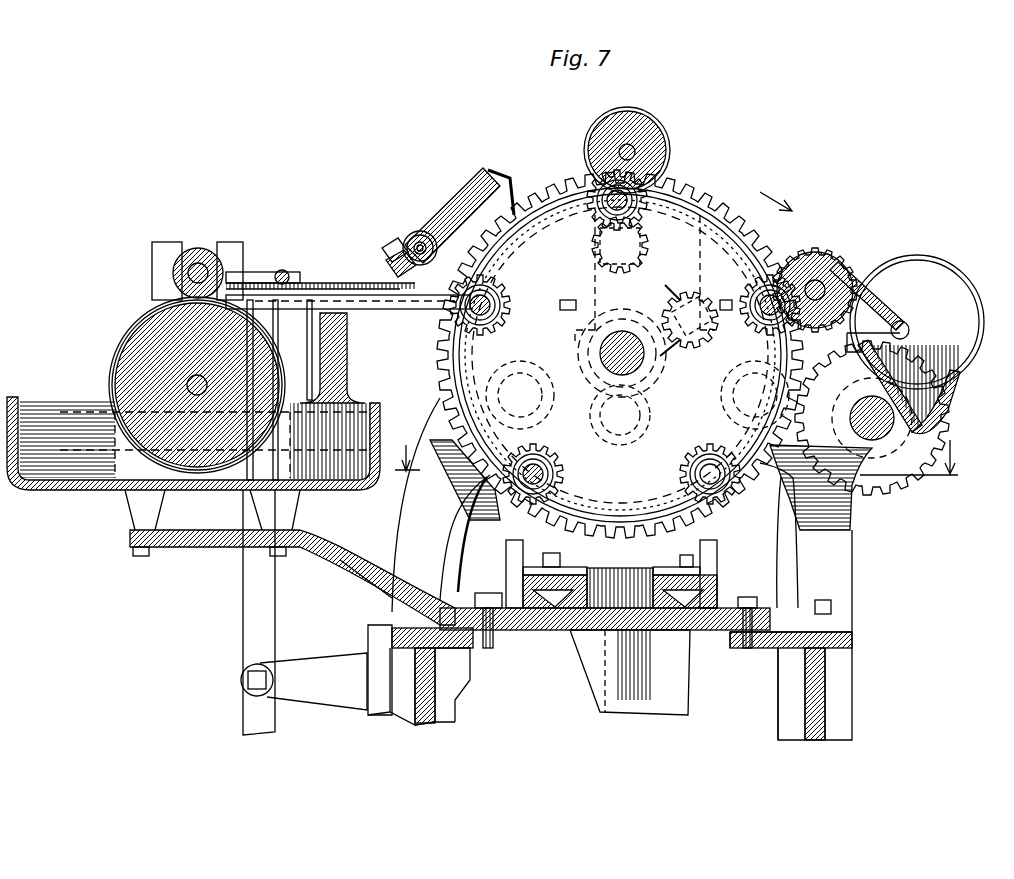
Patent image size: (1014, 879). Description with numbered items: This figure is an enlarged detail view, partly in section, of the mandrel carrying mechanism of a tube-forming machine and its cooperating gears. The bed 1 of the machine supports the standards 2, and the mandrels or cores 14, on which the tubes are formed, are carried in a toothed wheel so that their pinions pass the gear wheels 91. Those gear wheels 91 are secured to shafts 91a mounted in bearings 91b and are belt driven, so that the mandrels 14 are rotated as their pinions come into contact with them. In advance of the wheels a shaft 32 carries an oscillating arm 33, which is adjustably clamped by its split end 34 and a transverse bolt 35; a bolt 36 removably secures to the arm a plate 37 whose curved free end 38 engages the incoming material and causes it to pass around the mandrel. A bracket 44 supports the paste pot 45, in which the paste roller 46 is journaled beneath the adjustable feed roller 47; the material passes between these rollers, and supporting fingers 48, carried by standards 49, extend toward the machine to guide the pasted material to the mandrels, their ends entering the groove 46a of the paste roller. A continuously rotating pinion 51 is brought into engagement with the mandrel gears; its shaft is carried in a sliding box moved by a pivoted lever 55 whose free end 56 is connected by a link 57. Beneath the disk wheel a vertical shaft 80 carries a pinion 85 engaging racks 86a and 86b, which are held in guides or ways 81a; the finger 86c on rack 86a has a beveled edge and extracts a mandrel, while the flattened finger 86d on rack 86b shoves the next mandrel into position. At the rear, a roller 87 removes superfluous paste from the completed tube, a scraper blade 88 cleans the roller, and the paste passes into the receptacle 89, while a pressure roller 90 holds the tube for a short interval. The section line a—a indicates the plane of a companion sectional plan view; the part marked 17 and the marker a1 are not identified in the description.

The bed 1 is at (405, 700).
The standard 2 is at (400, 520).
The mandrel 14 is at (500, 312).
The shaft 17 is at (618, 332).
The shaft 32 is at (416, 236).
The oscillating plate or arm 33 is at (423, 232).
The split end 34 is at (392, 248).
The transverse bolt 35 is at (390, 262).
The bolt 36 is at (484, 174).
The plate 37 is at (508, 210).
The curved end 38 is at (510, 198).
The bracket 44 is at (200, 550).
The glue or paste pot 45 is at (40, 400).
The paste roller 46 is at (150, 330).
The groove 46a is at (150, 300).
The feed roller 47 is at (200, 252).
The supporting fingers 48 is at (308, 302).
The standards 49 is at (350, 368).
The continuously rotating pinion or gear wheel 51 is at (420, 298).
The pivoted lever 55 is at (255, 628).
The free end 56 is at (275, 270).
The link 57 is at (305, 283).
The vertical shaft 80 is at (645, 700).
The guides or ways 81a is at (690, 597).
The pinion wheel 85 is at (620, 575).
The rack 86a is at (660, 598).
The rack 86b is at (585, 600).
The finger 86c is at (717, 556).
The finger 86d is at (506, 548).
The roller 87 is at (825, 262).
The scraper blade 88 is at (900, 322).
The receptacle 89 is at (952, 372).
The pressure roller 90 is at (668, 152).
The gear wheels 91 is at (694, 292).
The shafts 91a is at (648, 250).
The bearings 91b is at (688, 392).
The section line a— a is at (730, 150).
The section arrow a1 is at (400, 465).